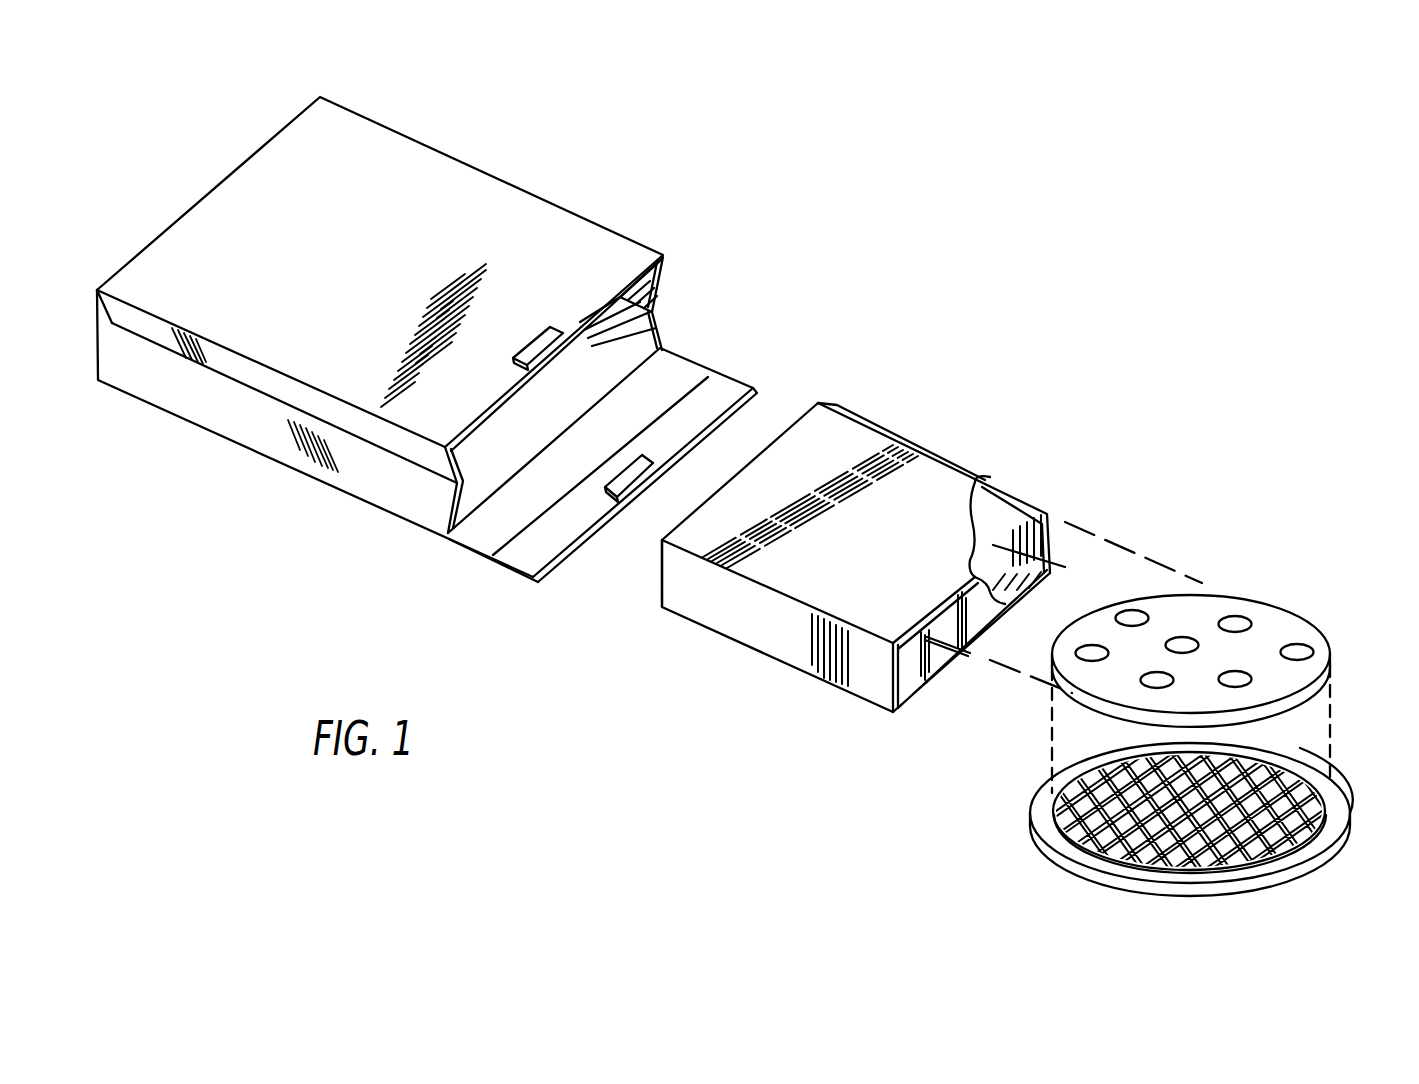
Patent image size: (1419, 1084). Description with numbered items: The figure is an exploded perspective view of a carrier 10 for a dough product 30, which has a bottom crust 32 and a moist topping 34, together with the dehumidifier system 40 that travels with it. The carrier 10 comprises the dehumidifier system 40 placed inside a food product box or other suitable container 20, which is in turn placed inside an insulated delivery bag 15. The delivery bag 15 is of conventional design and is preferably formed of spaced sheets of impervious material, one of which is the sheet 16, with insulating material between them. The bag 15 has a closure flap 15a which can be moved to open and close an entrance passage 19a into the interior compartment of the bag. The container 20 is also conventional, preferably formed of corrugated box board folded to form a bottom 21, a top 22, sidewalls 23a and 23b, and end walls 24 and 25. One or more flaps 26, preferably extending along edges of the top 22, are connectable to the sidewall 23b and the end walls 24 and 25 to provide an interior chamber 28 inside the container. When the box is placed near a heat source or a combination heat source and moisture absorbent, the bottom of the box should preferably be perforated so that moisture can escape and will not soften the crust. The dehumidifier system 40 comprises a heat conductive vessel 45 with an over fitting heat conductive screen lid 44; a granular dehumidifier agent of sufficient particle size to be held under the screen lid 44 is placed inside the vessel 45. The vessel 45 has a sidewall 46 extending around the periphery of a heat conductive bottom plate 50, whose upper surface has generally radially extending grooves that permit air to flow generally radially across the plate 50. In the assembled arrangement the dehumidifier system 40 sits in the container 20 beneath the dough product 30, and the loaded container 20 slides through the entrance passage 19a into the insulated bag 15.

The carrier 10 is at (1131, 525).
The insulated delivery bag 15 is at (499, 180).
The closure flap 15a is at (707, 390).
The sheet 16 is at (400, 152).
The entrance passage 19a is at (657, 345).
The container 20 is at (890, 447).
The bottom 21 is at (925, 682).
The top 22 is at (933, 480).
The sidewall 23a is at (787, 633).
The sidewall 23b is at (1048, 518).
The end wall 24 is at (660, 557).
The end wall 25 is at (960, 647).
The flap 26 is at (847, 410).
The interior chamber 28 is at (1048, 564).
The dough product 30 is at (1212, 592).
The bottom crust 32 is at (1072, 692).
The moist topping 34 is at (1283, 647).
The dehumidifier system 40 is at (1337, 843).
The heat conductive screen lid 44 is at (1267, 767).
The heat conductive vessel 45 is at (1342, 785).
The sidewall 46 is at (1058, 852).
The heat conductive bottom plate 50 is at (1143, 890).